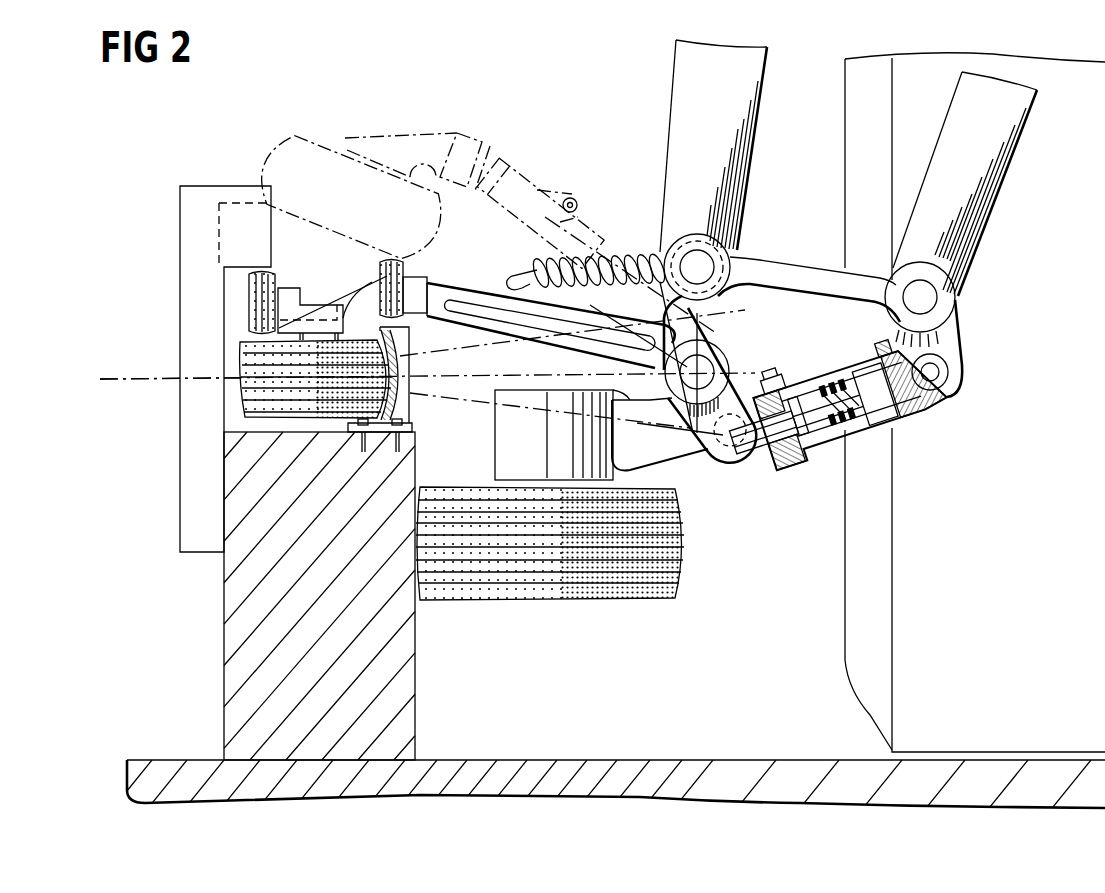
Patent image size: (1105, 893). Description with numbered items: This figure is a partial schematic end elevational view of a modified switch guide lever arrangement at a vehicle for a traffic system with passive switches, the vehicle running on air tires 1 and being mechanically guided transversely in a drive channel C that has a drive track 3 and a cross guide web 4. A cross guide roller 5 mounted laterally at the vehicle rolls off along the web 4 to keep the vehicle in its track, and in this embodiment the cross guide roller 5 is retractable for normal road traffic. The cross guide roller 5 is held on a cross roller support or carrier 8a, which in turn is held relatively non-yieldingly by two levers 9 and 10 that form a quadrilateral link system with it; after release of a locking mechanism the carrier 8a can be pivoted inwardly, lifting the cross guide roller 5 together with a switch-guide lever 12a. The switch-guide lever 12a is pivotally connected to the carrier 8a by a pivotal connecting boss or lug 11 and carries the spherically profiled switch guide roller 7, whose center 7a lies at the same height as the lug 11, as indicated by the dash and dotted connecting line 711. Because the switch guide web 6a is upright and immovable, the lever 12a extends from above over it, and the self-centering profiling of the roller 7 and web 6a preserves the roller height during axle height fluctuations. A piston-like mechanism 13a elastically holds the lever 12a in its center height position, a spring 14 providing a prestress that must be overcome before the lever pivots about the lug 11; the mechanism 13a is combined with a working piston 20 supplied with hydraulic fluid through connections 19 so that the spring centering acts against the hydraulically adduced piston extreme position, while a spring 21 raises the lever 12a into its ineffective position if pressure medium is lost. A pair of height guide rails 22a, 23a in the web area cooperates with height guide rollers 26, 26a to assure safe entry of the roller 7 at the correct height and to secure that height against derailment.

The air tires 1 is at (913, 582).
The drive track 3 is at (657, 777).
The cross guide step or web 4 is at (363, 658).
The cross guide roller 5 is at (607, 567).
The switch guide web 6a is at (412, 398).
The switch guide roller 7 is at (262, 390).
The center of the cross guide roller 7a is at (300, 422).
The cross roller support or carrier 8a is at (773, 307).
The lever 9 is at (993, 173).
The lever 10 is at (740, 147).
The pivotal connecting boss or lug 11 is at (707, 364).
The switch-guide lever 12a is at (460, 303).
The piston-like mechanism 13a is at (820, 447).
The spring 14 is at (863, 417).
The connections 19 is at (890, 350).
The working piston 20 is at (897, 428).
The spring 21 is at (608, 250).
The height guide rail 22a is at (403, 348).
The height guide rail 23a is at (234, 233).
The height guide roller 26 is at (253, 308).
The height guide roller 26a is at (385, 265).
The dash and dotted connecting line 711 is at (133, 378).
The drive channel C is at (768, 594).